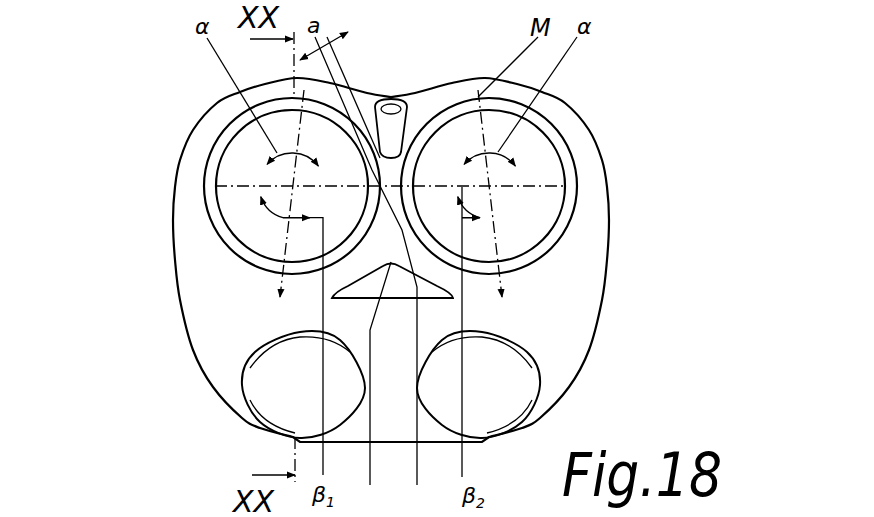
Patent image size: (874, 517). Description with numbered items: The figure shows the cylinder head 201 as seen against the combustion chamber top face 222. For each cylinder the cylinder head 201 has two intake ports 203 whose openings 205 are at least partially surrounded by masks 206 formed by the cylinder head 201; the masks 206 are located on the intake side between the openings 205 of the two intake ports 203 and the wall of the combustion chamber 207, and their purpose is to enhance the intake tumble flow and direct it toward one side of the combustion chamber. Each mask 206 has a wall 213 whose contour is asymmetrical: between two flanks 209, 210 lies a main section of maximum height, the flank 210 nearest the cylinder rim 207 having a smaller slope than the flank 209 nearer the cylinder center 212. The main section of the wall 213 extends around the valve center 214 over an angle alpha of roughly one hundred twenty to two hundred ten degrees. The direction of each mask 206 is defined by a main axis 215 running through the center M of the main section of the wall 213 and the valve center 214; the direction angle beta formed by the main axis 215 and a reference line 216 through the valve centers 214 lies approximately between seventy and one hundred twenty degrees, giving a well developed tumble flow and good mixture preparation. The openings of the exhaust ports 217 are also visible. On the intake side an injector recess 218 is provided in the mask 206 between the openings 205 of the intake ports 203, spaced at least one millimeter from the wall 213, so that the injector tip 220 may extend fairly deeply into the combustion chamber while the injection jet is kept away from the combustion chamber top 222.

The cylinder head 201 is at (172, 216).
The intake ports 203 is at (212, 186).
The openings of the intake ports 205 is at (285, 236).
The mask 206 is at (462, 92).
The wall of the combustion chamber 207 is at (489, 186).
The flank 209 is at (384, 274).
The flank 210 is at (217, 133).
The cylinder center 212 is at (346, 271).
The wall of the mask 213 is at (238, 110).
The valve center 214 is at (489, 186).
The main axis 215 is at (284, 249).
The reference line 216 is at (292, 186).
The openings of the exhaust ports 217 is at (257, 387).
The injector recess 218 is at (415, 93).
The injector tip 220 is at (390, 100).
The combustion chamber top 222 is at (592, 309).